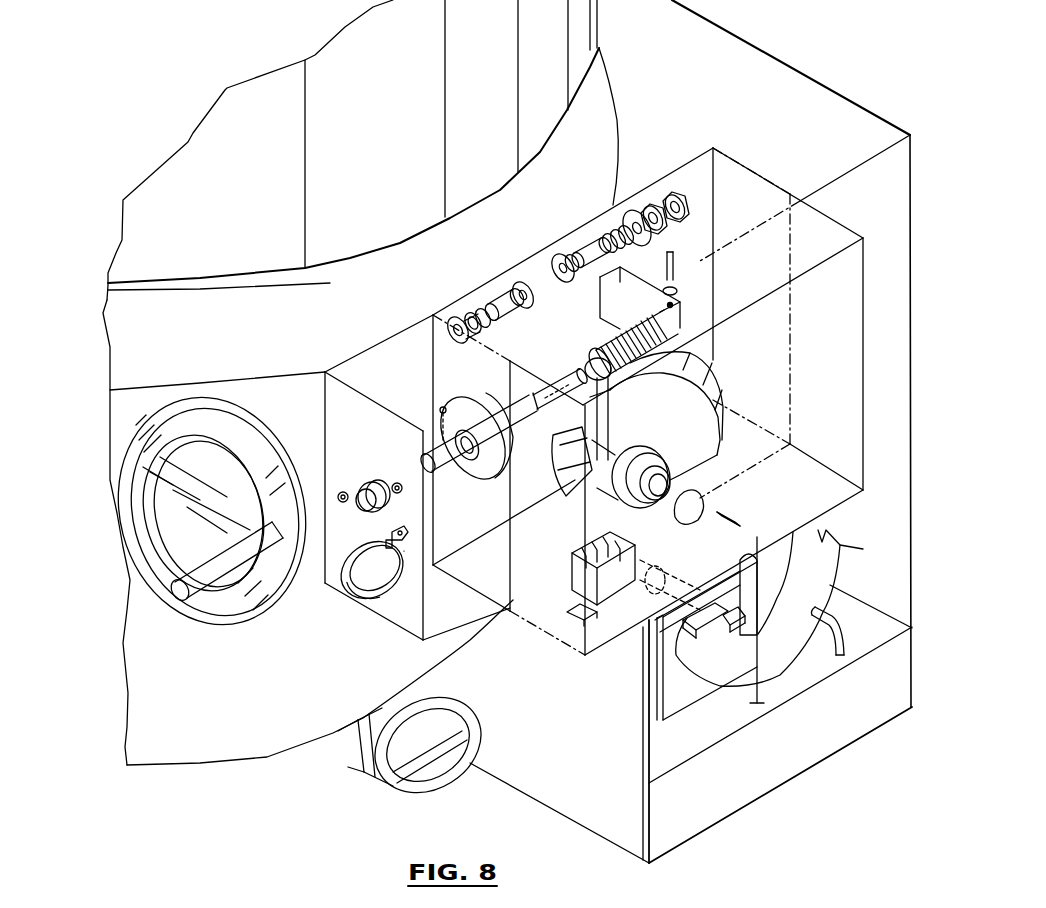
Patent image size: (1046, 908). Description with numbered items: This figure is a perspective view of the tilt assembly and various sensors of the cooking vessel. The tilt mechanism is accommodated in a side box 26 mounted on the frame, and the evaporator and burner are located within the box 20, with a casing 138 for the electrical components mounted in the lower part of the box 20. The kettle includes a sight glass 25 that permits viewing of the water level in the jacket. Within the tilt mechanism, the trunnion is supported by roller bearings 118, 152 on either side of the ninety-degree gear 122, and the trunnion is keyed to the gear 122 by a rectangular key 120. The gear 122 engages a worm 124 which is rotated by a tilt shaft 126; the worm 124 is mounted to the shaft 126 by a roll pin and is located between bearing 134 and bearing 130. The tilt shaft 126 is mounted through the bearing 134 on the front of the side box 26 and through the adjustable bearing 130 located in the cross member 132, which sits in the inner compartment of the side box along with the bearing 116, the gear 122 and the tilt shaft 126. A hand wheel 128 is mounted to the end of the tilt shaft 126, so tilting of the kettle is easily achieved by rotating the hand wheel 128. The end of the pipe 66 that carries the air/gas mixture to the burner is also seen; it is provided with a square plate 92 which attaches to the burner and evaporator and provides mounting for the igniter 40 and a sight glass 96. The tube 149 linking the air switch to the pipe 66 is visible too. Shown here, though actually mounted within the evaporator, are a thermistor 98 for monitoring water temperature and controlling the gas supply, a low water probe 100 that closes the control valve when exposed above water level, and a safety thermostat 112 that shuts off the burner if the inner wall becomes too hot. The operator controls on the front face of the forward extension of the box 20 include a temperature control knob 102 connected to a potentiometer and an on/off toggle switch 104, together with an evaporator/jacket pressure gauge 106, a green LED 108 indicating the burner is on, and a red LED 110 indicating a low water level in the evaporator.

The box 20 is at (785, 60).
The sight glass 25 is at (450, 748).
The side box 26 is at (853, 232).
The igniter 40 is at (707, 617).
The pipe 66 is at (783, 663).
The square plate 92 is at (692, 690).
The sight glass 96 is at (735, 623).
The thermistor 98 is at (680, 543).
The low water probe 100 is at (601, 581).
The temperature control knob 102 is at (363, 513).
The on/off toggle switch 104 is at (400, 547).
The evaporator/jacket pressure gauge 106 is at (372, 598).
The green LED 108 is at (397, 482).
The red LED 110 is at (343, 491).
The safety thermostat 112 is at (761, 562).
The bearing 116 is at (665, 472).
The roller bearing 118 is at (678, 472).
The rectangular key 120 is at (733, 510).
The 90° gear 122 is at (713, 382).
The worm 124 is at (600, 347).
The tilt shaft 126 is at (503, 413).
The hand wheel 128 is at (242, 613).
The adjustable bearing 130 is at (697, 315).
The cross member 132 is at (633, 277).
The bearing 134 is at (474, 478).
The casing 138 is at (795, 777).
The tube 149 is at (835, 600).
The roller bearing 152 is at (553, 448).